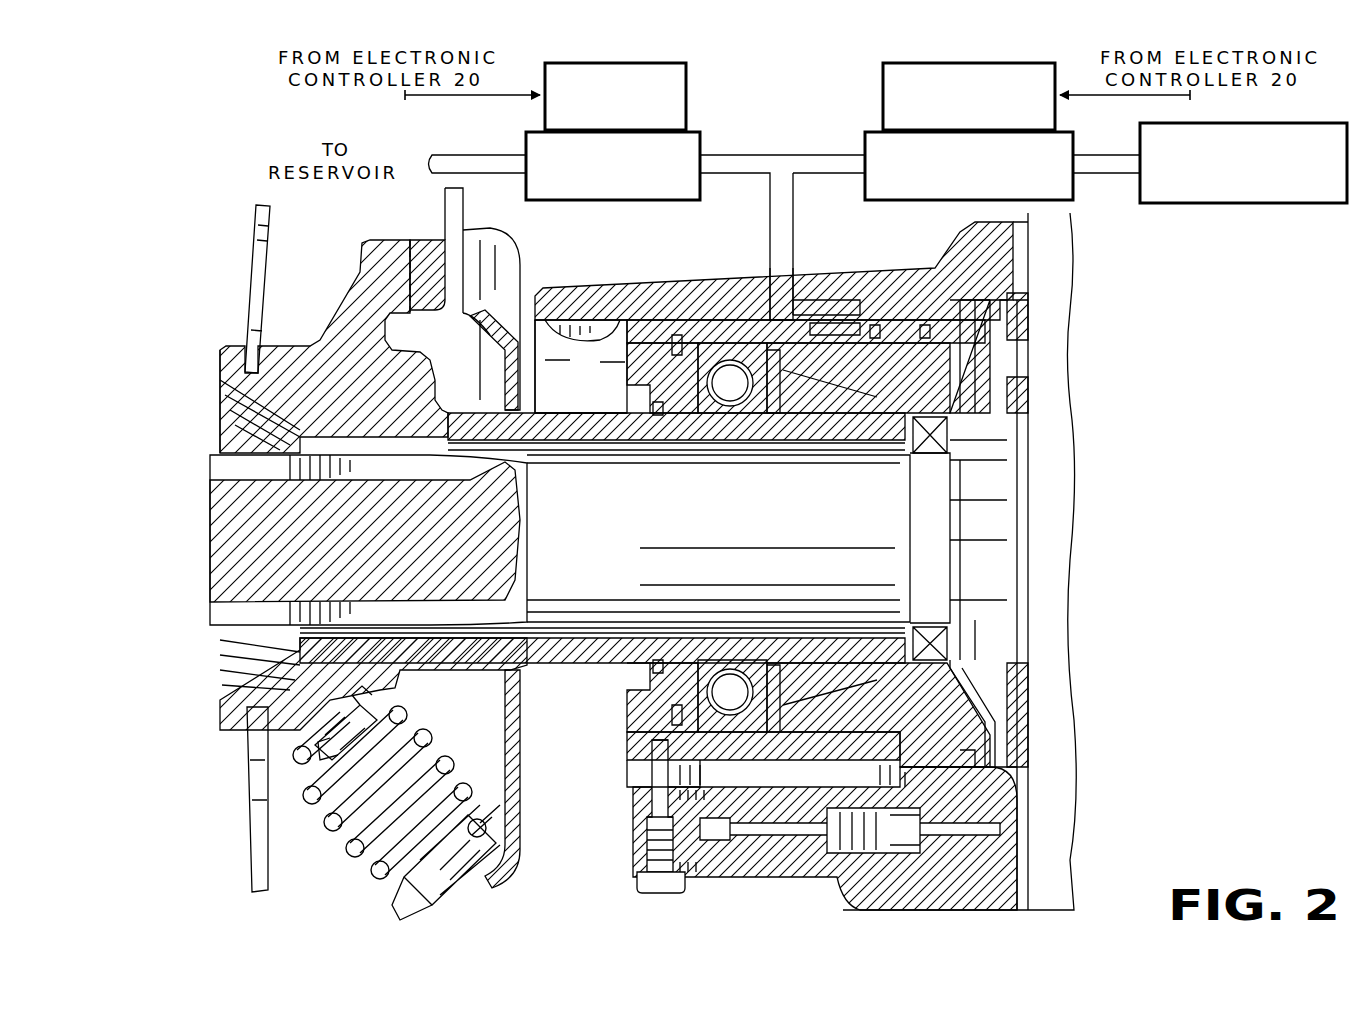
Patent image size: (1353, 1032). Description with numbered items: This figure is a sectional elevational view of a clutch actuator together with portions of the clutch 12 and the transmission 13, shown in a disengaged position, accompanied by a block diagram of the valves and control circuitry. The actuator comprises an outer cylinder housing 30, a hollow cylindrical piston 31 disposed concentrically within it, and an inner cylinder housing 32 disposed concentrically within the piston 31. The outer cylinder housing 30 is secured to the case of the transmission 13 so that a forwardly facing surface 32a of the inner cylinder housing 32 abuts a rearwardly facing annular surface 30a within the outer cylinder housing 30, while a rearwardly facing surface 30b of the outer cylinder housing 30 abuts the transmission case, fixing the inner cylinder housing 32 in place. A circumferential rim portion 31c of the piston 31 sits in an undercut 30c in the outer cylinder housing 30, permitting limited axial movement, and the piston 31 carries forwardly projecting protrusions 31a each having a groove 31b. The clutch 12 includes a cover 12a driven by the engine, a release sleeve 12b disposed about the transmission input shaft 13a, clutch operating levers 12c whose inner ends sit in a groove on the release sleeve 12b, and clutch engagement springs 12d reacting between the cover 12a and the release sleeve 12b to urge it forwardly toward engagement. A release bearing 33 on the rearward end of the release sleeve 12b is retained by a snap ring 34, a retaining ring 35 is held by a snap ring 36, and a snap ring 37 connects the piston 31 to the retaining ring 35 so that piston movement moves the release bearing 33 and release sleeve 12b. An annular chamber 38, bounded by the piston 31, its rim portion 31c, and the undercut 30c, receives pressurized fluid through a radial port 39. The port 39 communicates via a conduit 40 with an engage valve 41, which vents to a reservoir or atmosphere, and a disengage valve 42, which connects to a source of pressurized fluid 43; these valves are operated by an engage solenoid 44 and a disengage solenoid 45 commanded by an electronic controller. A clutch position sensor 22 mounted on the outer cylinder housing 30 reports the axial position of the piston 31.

The clutch 12 is at (303, 258).
The cover 12a is at (513, 838).
The release sleeve 12b is at (295, 353).
The clutch operating levers 12c is at (258, 210).
The clutch engagement springs 12d is at (348, 855).
The transmission 13 is at (1053, 340).
The transmission input shaft 13a is at (218, 557).
The clutch position sensor 22 is at (697, 885).
The outer cylinder housing 30 is at (575, 290).
The rearwardly facing annular surface 30a is at (990, 778).
The rearwardly facing surface 30b is at (1018, 832).
The undercut 30c is at (825, 310).
The piston 31 is at (782, 745).
The protrusions 31a is at (645, 327).
The groove 31b is at (677, 728).
The rim portion 31c is at (923, 310).
The inner cylinder housing 32 is at (883, 403).
The forwardly facing surface 32a is at (970, 730).
The release bearing 33 is at (740, 415).
The snap ring 34 is at (802, 427).
The retaining ring 35 is at (637, 367).
The snap ring 36 is at (658, 417).
The snap ring 37 is at (676, 343).
The annular chamber 38 is at (843, 313).
The port 39 is at (788, 288).
The conduit 40 is at (783, 165).
The engage valve 41 is at (700, 144).
The disengage valve 42 is at (1065, 192).
The source of pressurized fluid 43 is at (1312, 198).
The engage solenoid 44 is at (686, 76).
The disengage solenoid 45 is at (883, 83).